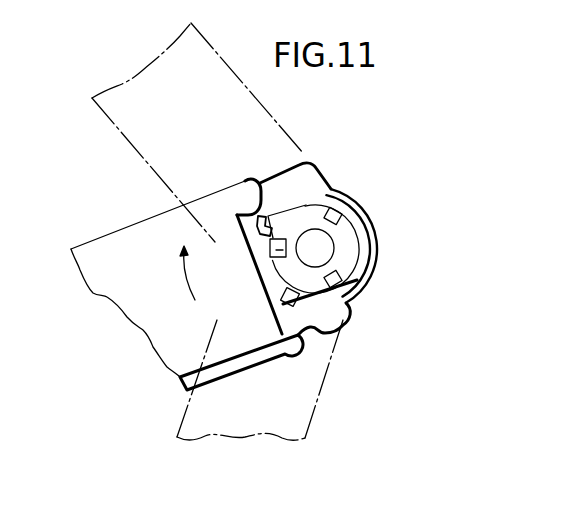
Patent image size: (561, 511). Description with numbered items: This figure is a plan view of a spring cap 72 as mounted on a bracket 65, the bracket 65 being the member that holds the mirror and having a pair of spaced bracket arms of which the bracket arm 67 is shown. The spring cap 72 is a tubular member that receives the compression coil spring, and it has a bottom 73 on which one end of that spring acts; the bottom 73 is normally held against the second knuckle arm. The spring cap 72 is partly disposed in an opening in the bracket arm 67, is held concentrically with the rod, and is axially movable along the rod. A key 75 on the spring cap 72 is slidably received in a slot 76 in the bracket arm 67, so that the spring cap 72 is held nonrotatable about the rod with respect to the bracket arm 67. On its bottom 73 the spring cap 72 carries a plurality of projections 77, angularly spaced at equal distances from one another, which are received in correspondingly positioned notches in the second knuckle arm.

The bracket 65 is at (118, 248).
The bracket arm 67 is at (332, 187).
The spring cap 72 is at (365, 252).
The bottom 73 is at (345, 233).
The key 75 is at (258, 233).
The slot 76 is at (266, 210).
The projections 77 is at (340, 212).